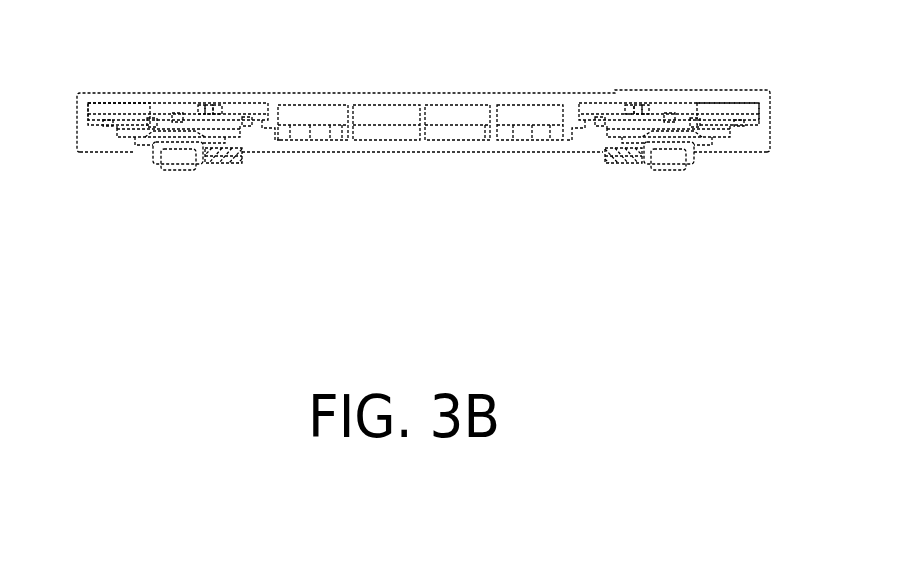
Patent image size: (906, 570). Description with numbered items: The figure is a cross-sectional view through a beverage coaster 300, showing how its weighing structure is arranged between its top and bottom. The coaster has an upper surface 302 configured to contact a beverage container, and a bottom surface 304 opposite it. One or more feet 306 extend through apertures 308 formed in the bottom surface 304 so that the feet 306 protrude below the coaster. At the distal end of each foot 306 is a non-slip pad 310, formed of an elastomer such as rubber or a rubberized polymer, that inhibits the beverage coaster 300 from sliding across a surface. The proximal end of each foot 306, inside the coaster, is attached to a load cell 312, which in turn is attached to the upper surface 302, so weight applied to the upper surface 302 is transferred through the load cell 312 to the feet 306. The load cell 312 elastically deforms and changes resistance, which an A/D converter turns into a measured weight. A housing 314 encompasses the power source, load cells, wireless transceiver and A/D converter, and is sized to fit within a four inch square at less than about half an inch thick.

The beverage coaster 300 is at (659, 46).
The upper surface 302 is at (156, 91).
The bottom surface 304 is at (440, 154).
The feet 306 is at (160, 169).
The apertures 308 is at (215, 153).
The non-slip pad 310 is at (185, 165).
The load cell 312 is at (179, 114).
The housing 314 is at (760, 146).